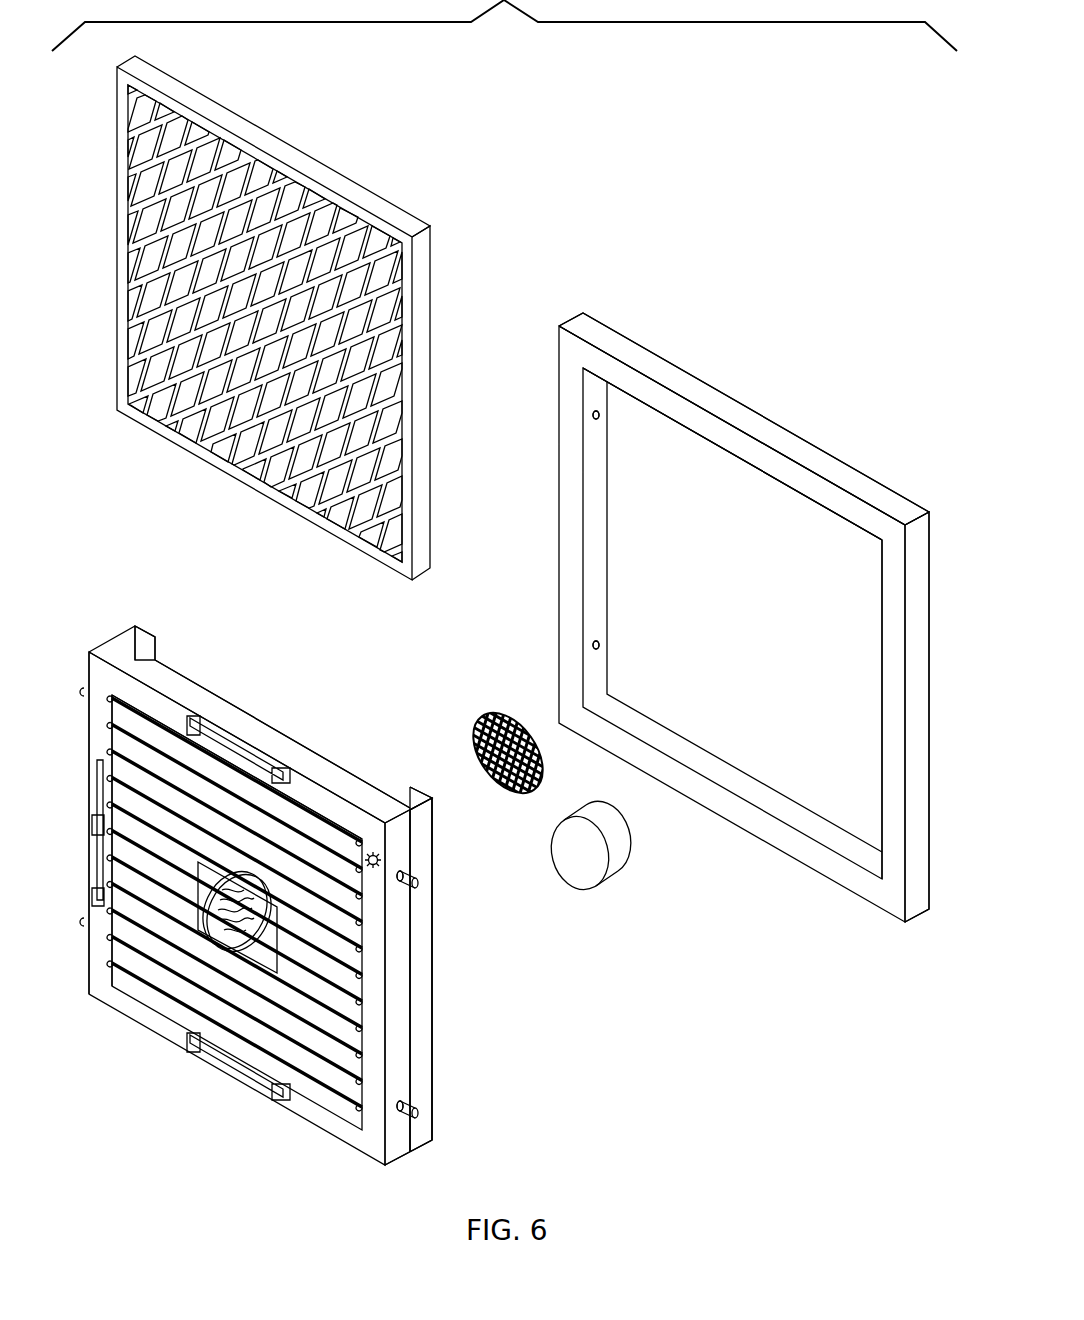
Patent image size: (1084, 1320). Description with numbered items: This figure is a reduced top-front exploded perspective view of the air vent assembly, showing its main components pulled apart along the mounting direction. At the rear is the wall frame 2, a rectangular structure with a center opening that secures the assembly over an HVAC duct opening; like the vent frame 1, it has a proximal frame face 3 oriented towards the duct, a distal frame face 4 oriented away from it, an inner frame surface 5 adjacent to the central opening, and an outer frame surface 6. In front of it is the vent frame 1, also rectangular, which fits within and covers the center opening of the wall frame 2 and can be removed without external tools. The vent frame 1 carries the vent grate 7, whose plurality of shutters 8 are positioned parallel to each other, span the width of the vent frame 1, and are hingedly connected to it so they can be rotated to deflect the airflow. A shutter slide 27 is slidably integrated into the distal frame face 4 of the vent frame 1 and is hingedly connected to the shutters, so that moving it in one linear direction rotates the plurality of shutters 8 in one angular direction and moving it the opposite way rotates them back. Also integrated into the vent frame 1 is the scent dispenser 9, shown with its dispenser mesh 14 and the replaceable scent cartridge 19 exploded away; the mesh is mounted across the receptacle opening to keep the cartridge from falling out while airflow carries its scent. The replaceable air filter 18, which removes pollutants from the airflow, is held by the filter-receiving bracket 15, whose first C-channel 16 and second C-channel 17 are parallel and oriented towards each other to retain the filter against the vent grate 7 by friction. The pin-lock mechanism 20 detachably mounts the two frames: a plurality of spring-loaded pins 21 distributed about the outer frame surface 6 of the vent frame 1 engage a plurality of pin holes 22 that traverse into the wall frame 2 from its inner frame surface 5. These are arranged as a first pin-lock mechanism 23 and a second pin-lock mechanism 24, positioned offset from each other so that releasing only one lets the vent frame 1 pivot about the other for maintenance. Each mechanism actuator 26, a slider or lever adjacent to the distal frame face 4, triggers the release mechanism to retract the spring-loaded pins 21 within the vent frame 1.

The vent frame 1 is at (91, 668).
The wall frame 2 is at (744, 606).
The proximal frame face 3 is at (905, 490).
The distal frame face 4 is at (820, 488).
The inner frame surface 5 is at (598, 542).
The outer frame surface 6 is at (795, 440).
The vent grate 7 is at (234, 935).
The plurality of shutters 8 is at (323, 1103).
The scent dispenser 9 is at (262, 888).
The dispenser mesh 14 is at (485, 720).
The filter-receiving bracket 15 is at (330, 885).
The first C-channel 16 is at (152, 636).
The second C-channel 17 is at (428, 963).
The replaceable air filter 18 is at (353, 190).
The replaceable scent cartridge 19 is at (615, 872).
The pin-lock mechanism 20 is at (580, 772).
The plurality of spring-loaded pins 21 is at (407, 994).
The plurality of pin holes 22 is at (596, 530).
The first pin-lock mechanism 23 is at (600, 418).
The second pin-lock mechanism 24 is at (600, 646).
The mechanism actuator 26 is at (283, 760).
The shutter slide 27 is at (95, 815).